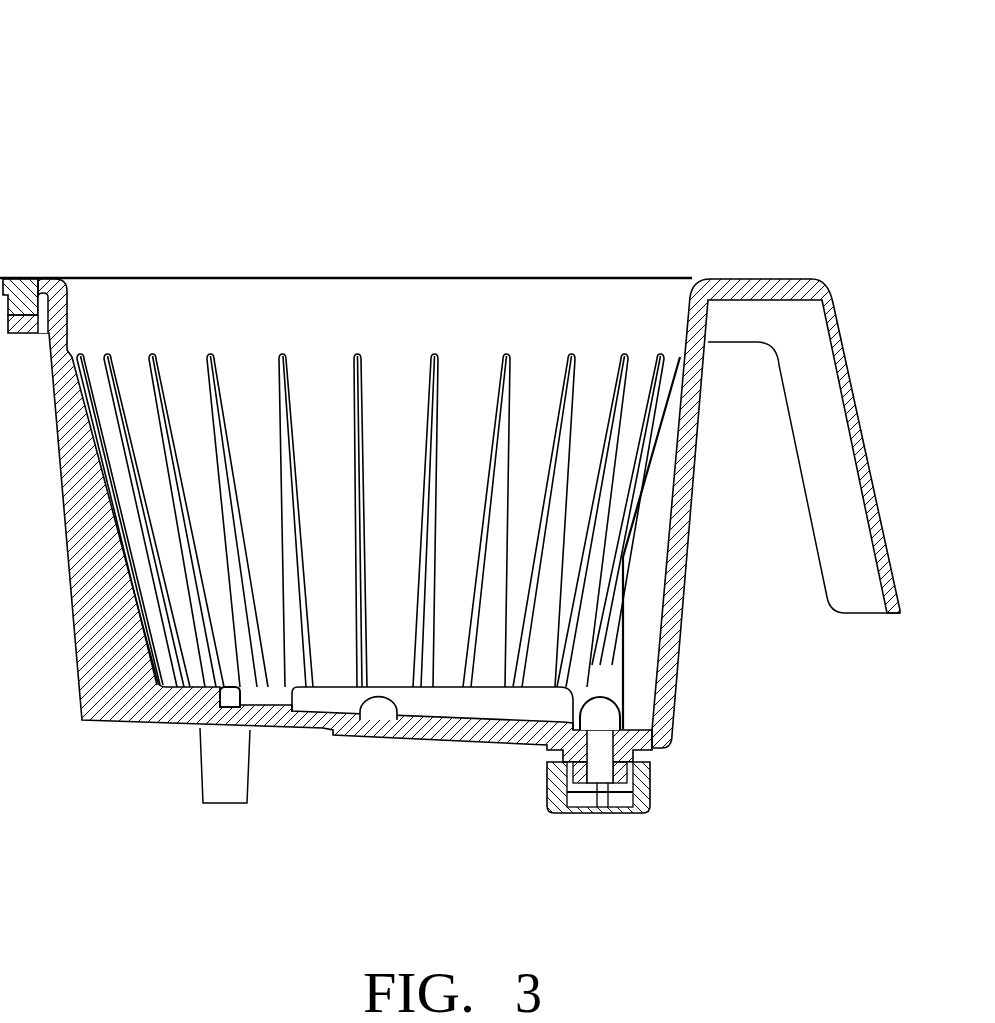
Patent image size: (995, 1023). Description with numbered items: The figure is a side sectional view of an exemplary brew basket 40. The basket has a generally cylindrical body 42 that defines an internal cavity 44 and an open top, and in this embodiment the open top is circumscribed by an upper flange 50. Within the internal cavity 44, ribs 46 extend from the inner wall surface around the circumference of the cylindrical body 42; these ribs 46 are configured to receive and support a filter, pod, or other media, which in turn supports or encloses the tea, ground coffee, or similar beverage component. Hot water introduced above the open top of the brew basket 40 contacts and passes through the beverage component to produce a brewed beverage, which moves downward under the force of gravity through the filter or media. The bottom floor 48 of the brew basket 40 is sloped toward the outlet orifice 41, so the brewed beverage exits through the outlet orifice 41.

The brew basket 40 is at (117, 125).
The outlet orifice 41 is at (598, 738).
The cylindrical body 42 is at (67, 548).
The internal cavity 44 is at (392, 338).
The ribs 46 is at (507, 353).
The bottom floor 48 is at (358, 703).
The upper flange 50 is at (738, 278).